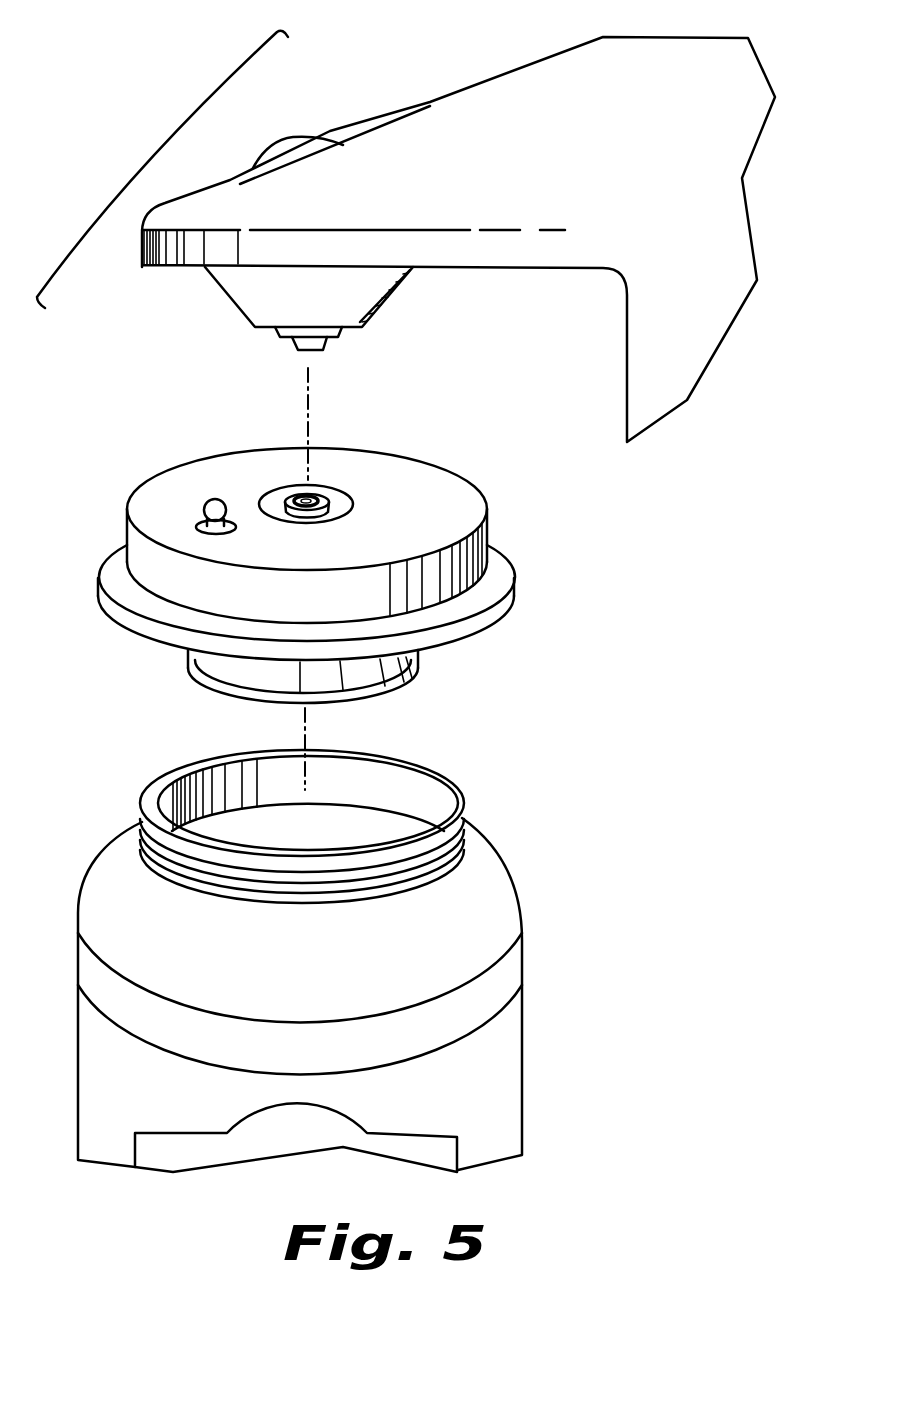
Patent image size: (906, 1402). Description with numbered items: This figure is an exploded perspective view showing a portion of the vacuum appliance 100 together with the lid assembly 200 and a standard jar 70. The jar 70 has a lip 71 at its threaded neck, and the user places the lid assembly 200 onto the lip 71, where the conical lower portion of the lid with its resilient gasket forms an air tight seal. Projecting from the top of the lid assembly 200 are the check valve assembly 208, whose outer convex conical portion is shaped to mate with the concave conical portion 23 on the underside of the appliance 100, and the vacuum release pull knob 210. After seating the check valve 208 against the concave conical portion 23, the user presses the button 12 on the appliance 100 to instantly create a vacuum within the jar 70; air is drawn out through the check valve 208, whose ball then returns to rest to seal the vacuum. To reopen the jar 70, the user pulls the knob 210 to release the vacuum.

The vacuum appliance 100 is at (160, 160).
The button 12 is at (303, 145).
The concave conical portion 23 is at (307, 345).
The lid assembly 200 is at (567, 465).
The check valve assembly 208 is at (277, 492).
The pull knob 210 is at (203, 507).
The jar 70 is at (488, 902).
The lip 71 is at (158, 792).